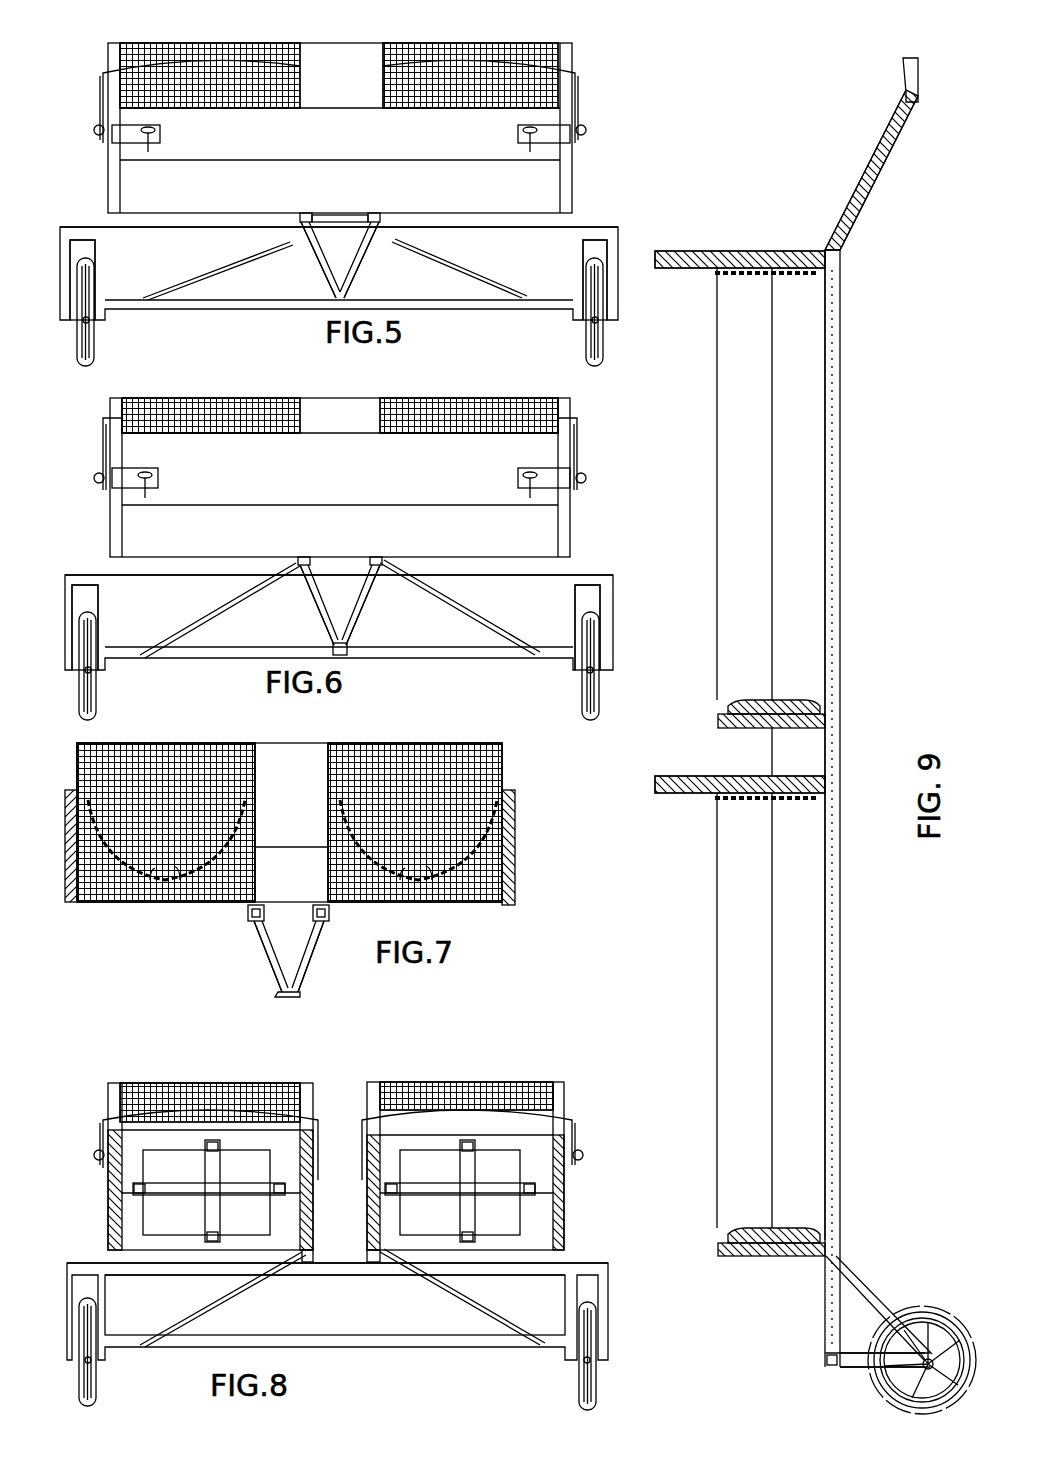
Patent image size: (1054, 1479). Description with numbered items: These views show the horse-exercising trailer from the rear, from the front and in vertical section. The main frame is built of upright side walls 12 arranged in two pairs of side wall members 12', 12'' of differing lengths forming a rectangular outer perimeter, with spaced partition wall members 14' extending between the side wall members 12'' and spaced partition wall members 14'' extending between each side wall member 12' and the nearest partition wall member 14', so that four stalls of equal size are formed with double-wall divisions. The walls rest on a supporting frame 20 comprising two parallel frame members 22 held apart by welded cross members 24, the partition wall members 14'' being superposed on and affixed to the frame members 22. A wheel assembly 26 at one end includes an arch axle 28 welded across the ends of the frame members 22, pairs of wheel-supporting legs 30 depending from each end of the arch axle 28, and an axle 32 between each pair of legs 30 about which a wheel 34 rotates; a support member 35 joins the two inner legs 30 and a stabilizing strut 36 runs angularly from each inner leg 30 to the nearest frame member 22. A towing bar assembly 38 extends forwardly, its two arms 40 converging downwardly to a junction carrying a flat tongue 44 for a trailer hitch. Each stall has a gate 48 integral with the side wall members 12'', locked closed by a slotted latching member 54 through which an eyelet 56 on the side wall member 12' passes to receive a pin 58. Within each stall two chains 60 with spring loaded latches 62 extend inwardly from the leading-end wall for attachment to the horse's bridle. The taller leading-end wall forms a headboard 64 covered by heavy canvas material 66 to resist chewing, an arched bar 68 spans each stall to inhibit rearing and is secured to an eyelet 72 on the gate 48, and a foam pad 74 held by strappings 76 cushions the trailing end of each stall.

In FIG. 8, the upright side wall 12 is at (184, 1168).
In FIG. 5, the upright side wall member 12' is at (347, 130).
In FIG. 6, the upright side wall member 12' is at (350, 466).
In FIG. 7, the upright side wall member 12' is at (292, 798).
In FIG. 9, the upright side wall member 12' is at (698, 217).
In FIG. 8, the upright side wall member 12'' is at (498, 1167).
In FIG. 9, the upright side wall member 12'' is at (731, 741).
In FIG. 8, the partition wall member 14' is at (246, 1164).
In FIG. 9, the partition wall member 14' is at (707, 743).
In FIG. 8, the partition wall member 14'' is at (421, 1191).
In FIG. 8, the supporting frame 20 is at (310, 1272).
In FIG. 9, the supporting frame 20 is at (840, 508).
In FIG. 5, the frame member 22 is at (307, 210).
In FIG. 9, the frame member 22 is at (834, 426).
In FIG. 5, the cross member 24 is at (360, 214).
In FIG. 6, the cross member 24 is at (366, 598).
In FIG. 8, the cross member 24 is at (323, 1248).
In FIG. 5, the wheel assembly 26 is at (484, 224).
In FIG. 6, the wheel assembly 26 is at (420, 574).
In FIG. 8, the wheel assembly 26 is at (402, 1274).
In FIG. 9, the wheel assembly 26 is at (824, 1368).
In FIG. 5, the arch axle 28 is at (592, 228).
In FIG. 6, the arch axle 28 is at (578, 578).
In FIG. 5, the wheel-supporting leg 30 is at (62, 266).
In FIG. 6, the wheel-supporting leg 30 is at (66, 560).
In FIG. 8, the wheel-supporting leg 30 is at (66, 1276).
In FIG. 9, the wheel-supporting leg 30 is at (846, 1368).
In FIG. 5, the axle 32 is at (98, 320).
In FIG. 6, the axle 32 is at (102, 670).
In FIG. 8, the axle 32 is at (100, 1360).
In FIG. 5, the wheel 34 is at (98, 348).
In FIG. 6, the wheel 34 is at (102, 692).
In FIG. 8, the wheel 34 is at (102, 1382).
In FIG. 9, the wheel 34 is at (922, 1306).
In FIG. 5, the support member 35 is at (444, 304).
In FIG. 6, the support member 35 is at (412, 656).
In FIG. 5, the stabilizing strut 36 is at (222, 260).
In FIG. 6, the stabilizing strut 36 is at (218, 618).
In FIG. 8, the stabilizing strut 36 is at (232, 1300).
In FIG. 9, the stabilizing strut 36 is at (856, 1288).
In FIG. 5, the towing bar assembly 38 is at (350, 280).
In FIG. 6, the towing bar assembly 38 is at (312, 600).
In FIG. 7, the towing bar assembly 38 is at (316, 976).
In FIG. 9, the towing bar assembly 38 is at (854, 168).
In FIG. 5, the arm 40 is at (314, 259).
In FIG. 6, the arm 40 is at (314, 622).
In FIG. 7, the arm 40 is at (258, 966).
In FIG. 9, the arm 40 is at (882, 116).
In FIG. 9, the tongue 44 is at (900, 58).
In FIG. 5, the gate 48 is at (107, 186).
In FIG. 6, the gate 48 is at (110, 524).
In FIG. 7, the gate 48 is at (71, 833).
In FIG. 8, the gate 48 is at (108, 1198).
In FIG. 9, the gate 48 is at (714, 406).
In FIG. 5, the slotted latching member 54 is at (150, 128).
In FIG. 6, the slotted latching member 54 is at (130, 468).
In FIG. 5, the eyelet 56 is at (156, 136).
In FIG. 6, the eyelet 56 is at (522, 476).
In FIG. 5, the pin 58 is at (150, 150).
In FIG. 6, the pin 58 is at (152, 484).
In FIG. 7, the chain 60 is at (130, 824).
In FIG. 9, the chain 60 is at (744, 278).
In FIG. 7, the spring loaded latch 62 is at (146, 874).
In FIG. 5, the headboard 64 is at (145, 42).
In FIG. 6, the headboard 64 is at (295, 398).
In FIG. 7, the headboard 64 is at (198, 748).
In FIG. 8, the headboard 64 is at (168, 1084).
In FIG. 9, the headboard 64 is at (698, 270).
In FIG. 5, the canvas material 66 is at (275, 50).
In FIG. 6, the canvas material 66 is at (220, 414).
In FIG. 7, the canvas material 66 is at (222, 801).
In FIG. 8, the canvas material 66 is at (243, 1086).
In FIG. 9, the canvas material 66 is at (656, 270).
In FIG. 5, the arched bar 68 is at (217, 64).
In FIG. 6, the arched bar 68 is at (104, 418).
In FIG. 8, the arched bar 68 is at (102, 1116).
In FIG. 5, the eyelet 72 is at (94, 134).
In FIG. 6, the eyelet 72 is at (94, 474).
In FIG. 8, the eyelet 72 is at (90, 1156).
In FIG. 9, the foam pad 74 is at (764, 700).
In FIG. 9, the strapping 76 is at (725, 712).